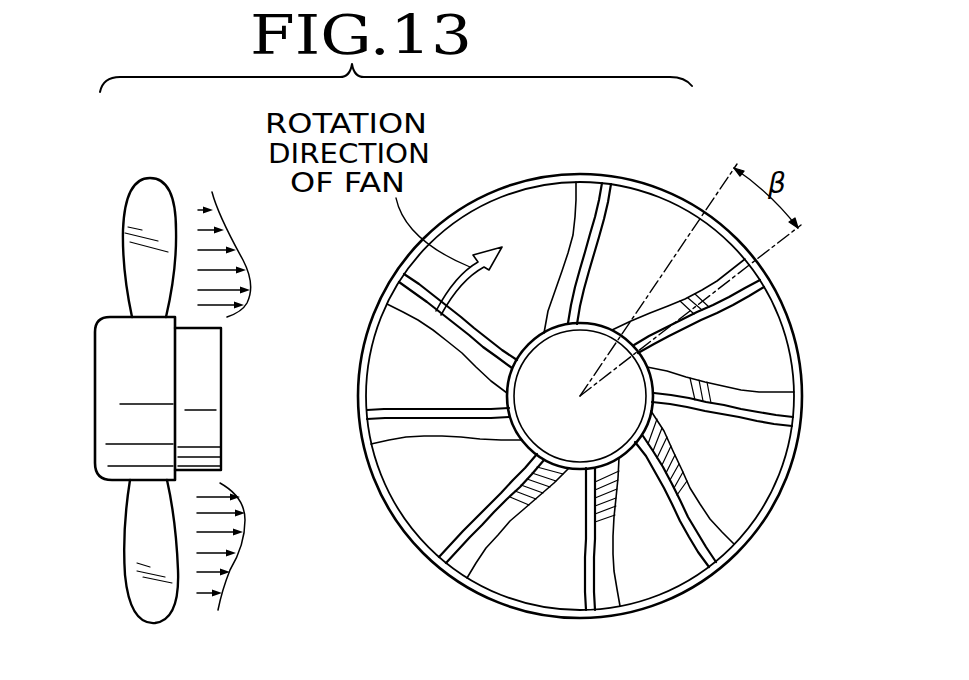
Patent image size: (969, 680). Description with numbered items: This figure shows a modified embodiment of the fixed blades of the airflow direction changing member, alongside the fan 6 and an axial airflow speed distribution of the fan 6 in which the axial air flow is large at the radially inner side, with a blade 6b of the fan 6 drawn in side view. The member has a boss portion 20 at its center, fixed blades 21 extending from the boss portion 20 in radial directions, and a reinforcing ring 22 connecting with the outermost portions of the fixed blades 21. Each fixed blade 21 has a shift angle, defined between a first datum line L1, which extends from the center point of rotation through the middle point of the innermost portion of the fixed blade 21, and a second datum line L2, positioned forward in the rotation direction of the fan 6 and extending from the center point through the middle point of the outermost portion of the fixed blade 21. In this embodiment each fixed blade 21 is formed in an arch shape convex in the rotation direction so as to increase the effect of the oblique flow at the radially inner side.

The fan 6 is at (101, 313).
The fan blade 6b is at (133, 215).
The boss portion 20 is at (510, 427).
The fixed blade 21 is at (576, 218).
The reinforcing ring 22 is at (783, 310).
The first datum line L1 is at (702, 192).
The second datum line L2 is at (770, 248).